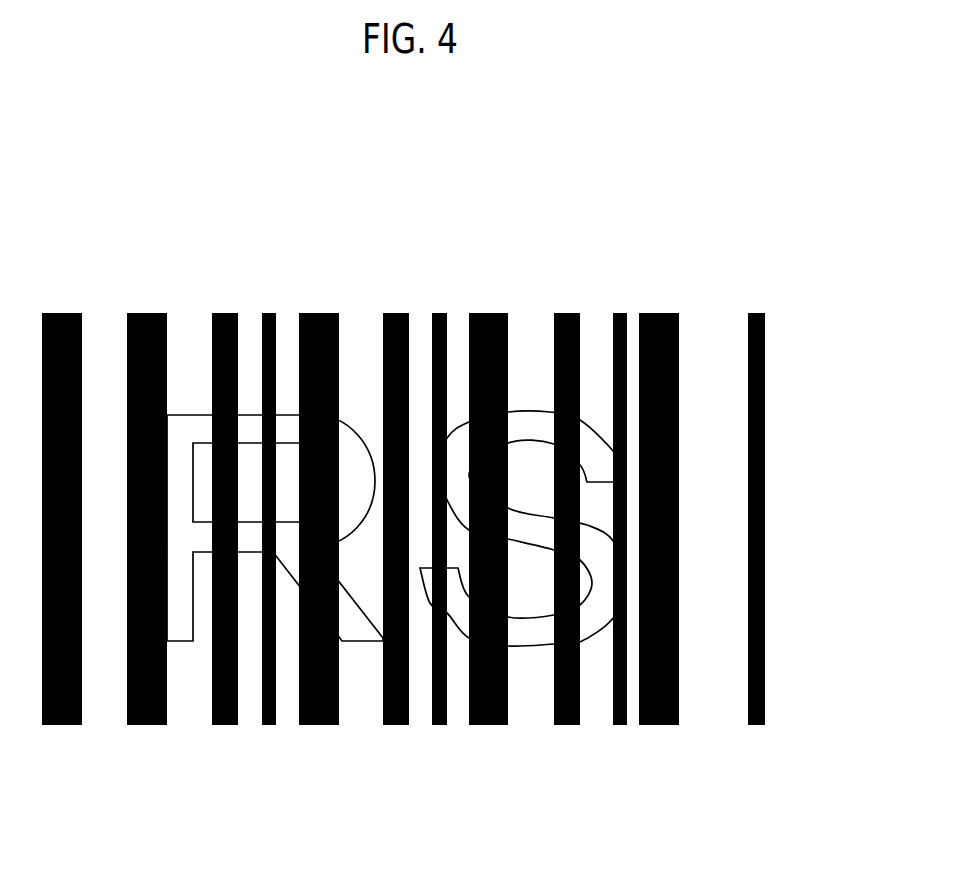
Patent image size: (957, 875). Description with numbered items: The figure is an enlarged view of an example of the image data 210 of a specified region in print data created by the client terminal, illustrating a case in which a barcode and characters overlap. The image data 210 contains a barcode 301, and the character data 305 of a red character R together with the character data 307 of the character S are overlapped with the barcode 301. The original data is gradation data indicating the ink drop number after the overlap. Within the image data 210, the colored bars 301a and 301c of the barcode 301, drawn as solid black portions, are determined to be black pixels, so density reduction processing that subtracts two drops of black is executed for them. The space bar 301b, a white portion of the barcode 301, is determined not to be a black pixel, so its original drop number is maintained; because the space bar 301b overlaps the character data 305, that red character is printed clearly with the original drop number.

The image data of the specified region 210 is at (418, 539).
The character data of red character R 305 is at (186, 414).
The character data of S 307 is at (527, 413).
The barcode 301 is at (187, 589).
The colored bar 301a is at (143, 725).
The space bar 301b is at (193, 725).
The colored bar 301c is at (260, 565).